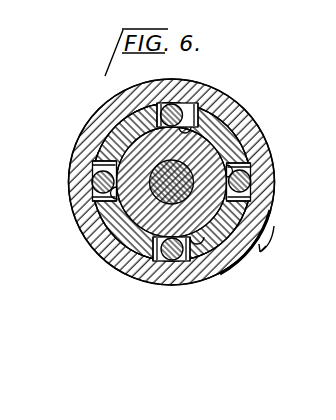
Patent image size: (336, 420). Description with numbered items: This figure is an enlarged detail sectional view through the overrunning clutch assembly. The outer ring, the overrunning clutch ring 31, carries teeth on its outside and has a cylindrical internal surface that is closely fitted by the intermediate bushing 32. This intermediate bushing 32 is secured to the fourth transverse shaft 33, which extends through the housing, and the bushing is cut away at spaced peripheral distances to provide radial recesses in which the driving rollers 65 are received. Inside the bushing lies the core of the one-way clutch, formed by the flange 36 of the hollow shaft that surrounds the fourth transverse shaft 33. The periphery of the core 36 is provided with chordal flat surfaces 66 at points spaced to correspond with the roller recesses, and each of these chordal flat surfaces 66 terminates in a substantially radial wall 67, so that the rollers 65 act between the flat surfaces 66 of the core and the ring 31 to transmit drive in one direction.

The overrunning clutch ring 31 is at (270, 156).
The intermediate bushing 32 is at (237, 133).
The fourth transverse shaft 33 is at (97, 212).
The flange 36 is at (127, 132).
The driving rollers 65 is at (173, 110).
The chordal flat surfaces 66 is at (117, 147).
The radial wall 67 is at (130, 117).